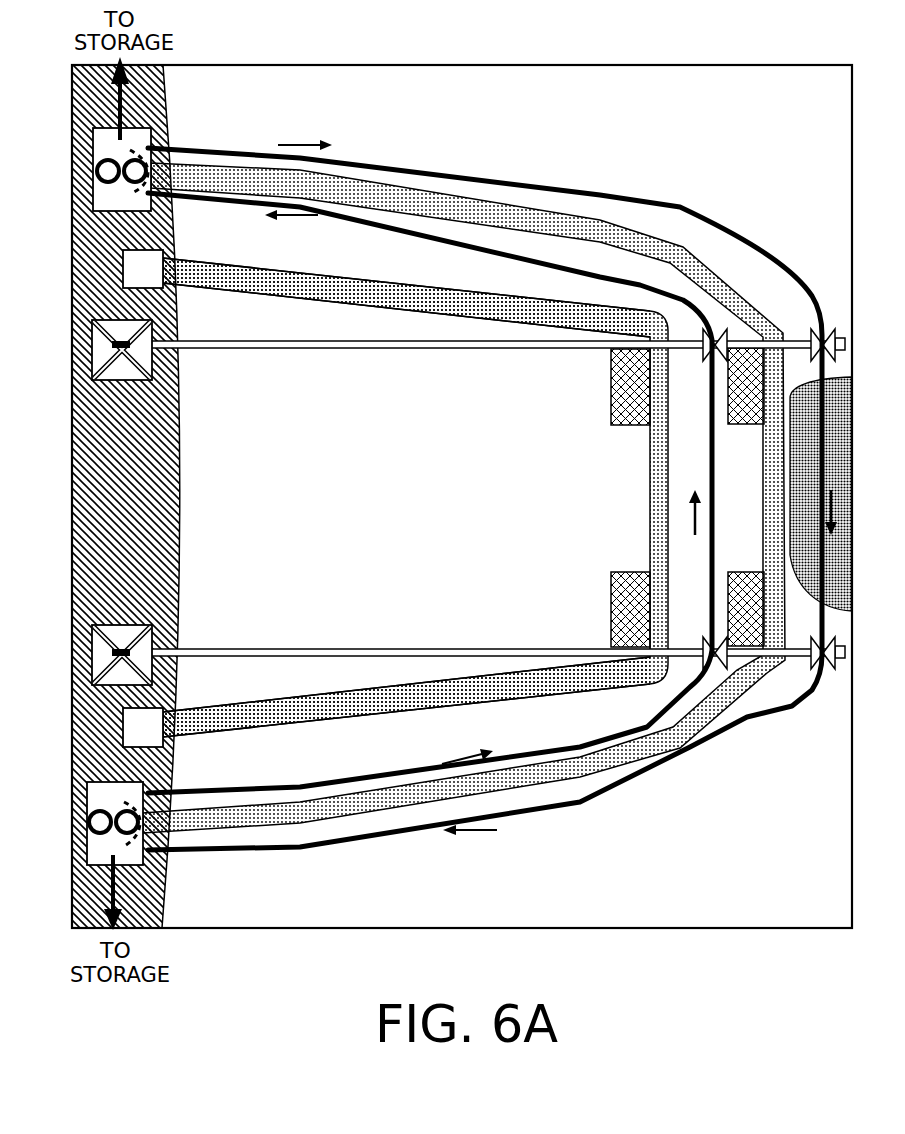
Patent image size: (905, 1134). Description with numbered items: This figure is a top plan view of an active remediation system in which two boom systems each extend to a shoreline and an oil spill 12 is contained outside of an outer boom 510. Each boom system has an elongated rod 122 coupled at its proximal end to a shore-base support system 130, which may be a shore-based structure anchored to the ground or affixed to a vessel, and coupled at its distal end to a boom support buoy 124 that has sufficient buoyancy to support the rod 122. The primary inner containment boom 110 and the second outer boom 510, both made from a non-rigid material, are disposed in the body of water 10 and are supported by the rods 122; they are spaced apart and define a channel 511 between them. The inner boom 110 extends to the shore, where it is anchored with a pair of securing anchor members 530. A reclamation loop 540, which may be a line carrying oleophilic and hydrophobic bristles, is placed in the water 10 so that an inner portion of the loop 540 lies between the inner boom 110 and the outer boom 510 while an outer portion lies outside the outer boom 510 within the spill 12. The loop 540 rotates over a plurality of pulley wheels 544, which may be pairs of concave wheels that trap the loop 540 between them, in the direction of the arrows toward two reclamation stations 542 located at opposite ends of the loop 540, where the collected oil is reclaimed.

The body of water 10 is at (476, 482).
The oil slick 12 is at (817, 446).
The containment boom 110 is at (652, 500).
The elongated rod 122 is at (412, 341).
The boom support buoy 124 is at (612, 404).
The shore-base support system 130 is at (104, 344).
The outer boom 510 is at (766, 502).
The channel 511 is at (470, 282).
The securing anchor member 530 is at (123, 272).
The reclamation loop 540 is at (596, 190).
The reclamation station 542 is at (93, 176).
The pulley wheel 544 is at (832, 336).